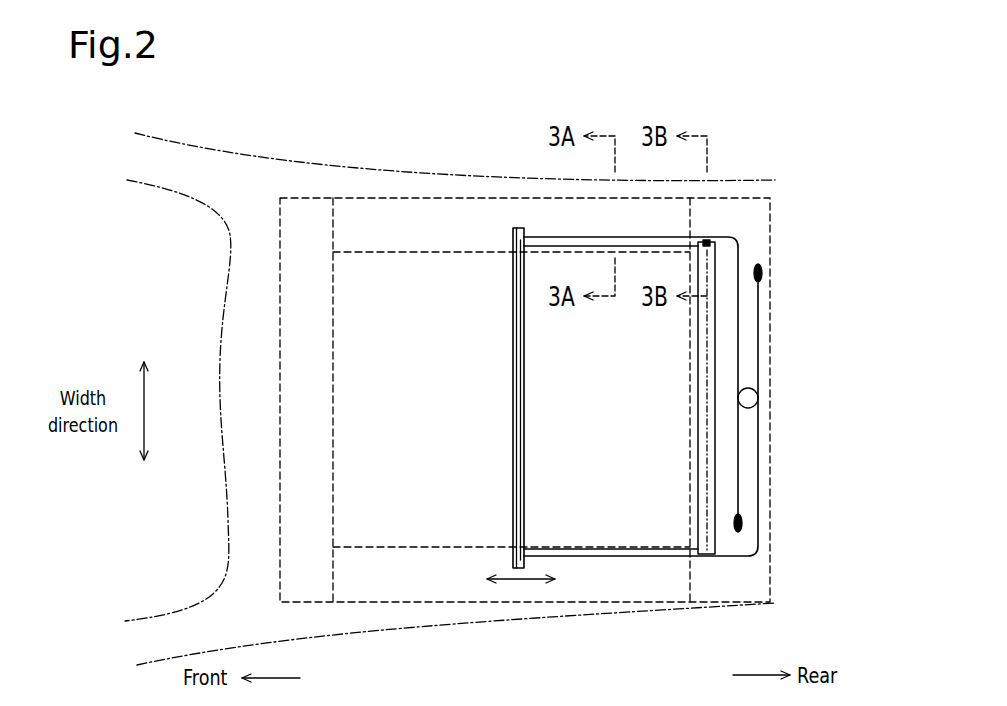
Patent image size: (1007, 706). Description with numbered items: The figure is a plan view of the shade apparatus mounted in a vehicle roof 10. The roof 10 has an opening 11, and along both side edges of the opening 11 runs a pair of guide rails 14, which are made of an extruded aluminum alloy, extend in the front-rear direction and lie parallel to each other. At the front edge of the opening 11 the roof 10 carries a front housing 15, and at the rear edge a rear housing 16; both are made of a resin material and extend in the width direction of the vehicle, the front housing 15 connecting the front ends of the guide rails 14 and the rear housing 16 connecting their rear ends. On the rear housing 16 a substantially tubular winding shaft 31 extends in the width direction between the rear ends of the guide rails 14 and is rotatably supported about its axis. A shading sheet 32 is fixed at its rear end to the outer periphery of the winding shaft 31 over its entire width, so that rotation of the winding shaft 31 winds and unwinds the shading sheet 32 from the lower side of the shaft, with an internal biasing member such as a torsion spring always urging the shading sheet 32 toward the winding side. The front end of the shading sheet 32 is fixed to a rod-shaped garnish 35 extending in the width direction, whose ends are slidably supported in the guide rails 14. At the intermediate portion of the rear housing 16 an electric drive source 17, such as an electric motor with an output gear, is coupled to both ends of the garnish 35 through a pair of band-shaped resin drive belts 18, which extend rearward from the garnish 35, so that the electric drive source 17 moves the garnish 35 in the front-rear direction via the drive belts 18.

The roof 10 is at (396, 172).
The opening 11 is at (511, 399).
The guide rails 14 is at (350, 198).
The front housing 15 is at (280, 302).
The rear housing 16 is at (771, 432).
The electric drive source 17 is at (752, 390).
The drive belts 18 is at (576, 238).
The winding shaft 31 is at (712, 562).
The shading sheet 32 is at (533, 403).
The garnish 35 is at (513, 364).